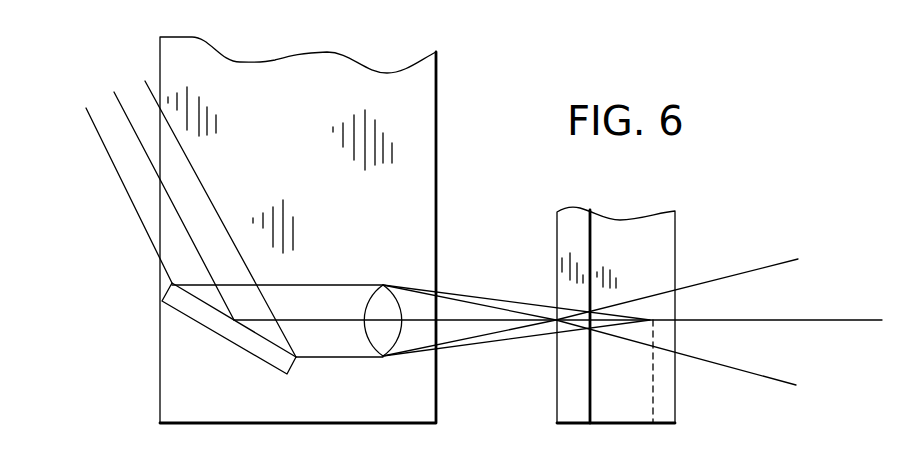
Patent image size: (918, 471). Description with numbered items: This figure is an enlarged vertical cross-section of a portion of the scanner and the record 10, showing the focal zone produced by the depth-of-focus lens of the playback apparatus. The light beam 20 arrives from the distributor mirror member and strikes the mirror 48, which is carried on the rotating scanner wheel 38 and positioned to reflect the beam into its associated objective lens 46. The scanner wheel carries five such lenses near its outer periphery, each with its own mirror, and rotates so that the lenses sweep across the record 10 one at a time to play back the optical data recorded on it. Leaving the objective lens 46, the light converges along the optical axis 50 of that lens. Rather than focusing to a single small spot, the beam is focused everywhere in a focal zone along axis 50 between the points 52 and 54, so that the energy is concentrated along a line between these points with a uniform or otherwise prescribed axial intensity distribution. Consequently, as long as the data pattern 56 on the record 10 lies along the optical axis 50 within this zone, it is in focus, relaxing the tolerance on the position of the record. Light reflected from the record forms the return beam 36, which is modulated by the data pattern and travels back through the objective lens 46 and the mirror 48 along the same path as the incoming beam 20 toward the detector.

The record 10 is at (675, 257).
The light beam 20 is at (164, 190).
The return beam 36 is at (138, 60).
The scanner wheel 38 is at (160, 372).
The objective lens 46 is at (383, 357).
The mirror 48 is at (230, 343).
The optical axis 50 is at (480, 322).
The focal zone end point 52 is at (552, 323).
The focal zone end point 54 is at (652, 318).
The data pattern 56 is at (592, 353).